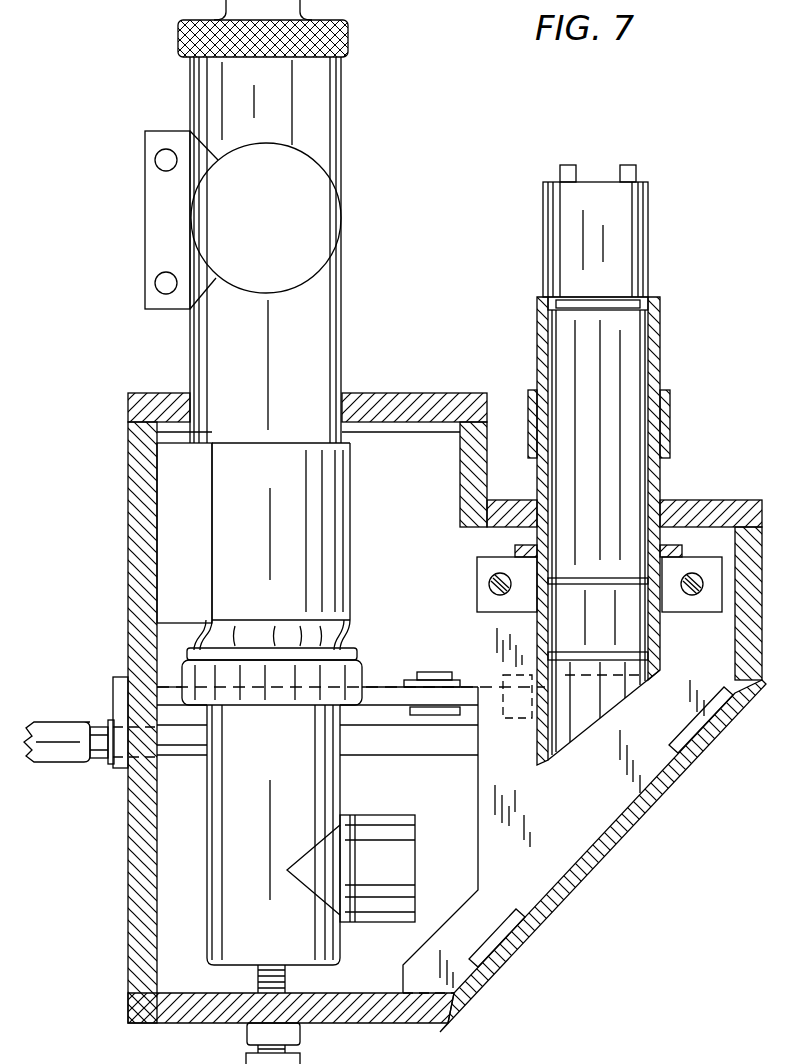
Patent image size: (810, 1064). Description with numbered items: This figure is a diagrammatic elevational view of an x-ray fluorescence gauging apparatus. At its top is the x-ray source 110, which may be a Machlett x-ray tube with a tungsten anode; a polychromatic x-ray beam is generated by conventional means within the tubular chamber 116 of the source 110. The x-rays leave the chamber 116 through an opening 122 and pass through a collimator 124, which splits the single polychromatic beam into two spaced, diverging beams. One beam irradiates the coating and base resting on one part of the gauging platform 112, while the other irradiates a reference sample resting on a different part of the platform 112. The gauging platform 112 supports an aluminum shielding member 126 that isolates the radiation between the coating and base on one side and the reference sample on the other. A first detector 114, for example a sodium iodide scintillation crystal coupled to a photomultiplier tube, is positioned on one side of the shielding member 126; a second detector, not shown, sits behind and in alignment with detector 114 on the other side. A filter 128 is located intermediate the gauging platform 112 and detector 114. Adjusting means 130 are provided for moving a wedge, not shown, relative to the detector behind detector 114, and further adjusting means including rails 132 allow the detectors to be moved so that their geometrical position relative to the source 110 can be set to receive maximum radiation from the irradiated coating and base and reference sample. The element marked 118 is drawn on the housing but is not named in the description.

The x-ray source 110 is at (362, 266).
The gauging platform 112 is at (605, 857).
The first detector 114 is at (645, 338).
The tubular chamber 116 is at (206, 98).
The thumbscrew 118 is at (133, 831).
The opening 122 is at (343, 822).
The collimator 124 is at (396, 821).
The aluminum shielding member 126 is at (508, 826).
The filter 128 is at (655, 665).
The adjusting means 130 is at (382, 688).
The rails 132 is at (489, 583).